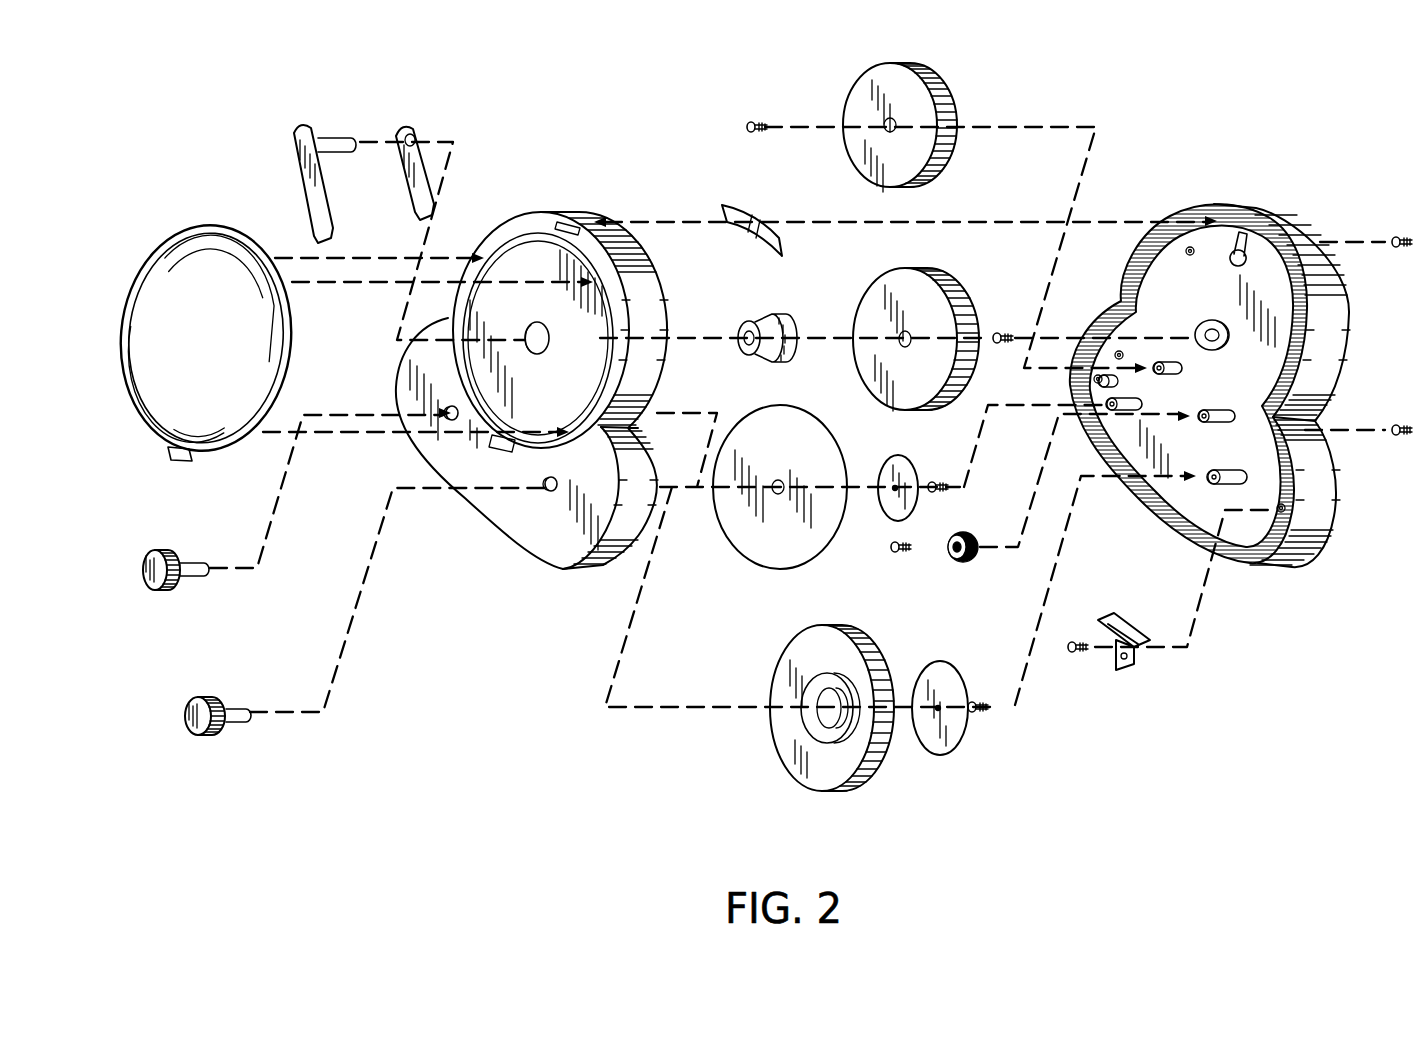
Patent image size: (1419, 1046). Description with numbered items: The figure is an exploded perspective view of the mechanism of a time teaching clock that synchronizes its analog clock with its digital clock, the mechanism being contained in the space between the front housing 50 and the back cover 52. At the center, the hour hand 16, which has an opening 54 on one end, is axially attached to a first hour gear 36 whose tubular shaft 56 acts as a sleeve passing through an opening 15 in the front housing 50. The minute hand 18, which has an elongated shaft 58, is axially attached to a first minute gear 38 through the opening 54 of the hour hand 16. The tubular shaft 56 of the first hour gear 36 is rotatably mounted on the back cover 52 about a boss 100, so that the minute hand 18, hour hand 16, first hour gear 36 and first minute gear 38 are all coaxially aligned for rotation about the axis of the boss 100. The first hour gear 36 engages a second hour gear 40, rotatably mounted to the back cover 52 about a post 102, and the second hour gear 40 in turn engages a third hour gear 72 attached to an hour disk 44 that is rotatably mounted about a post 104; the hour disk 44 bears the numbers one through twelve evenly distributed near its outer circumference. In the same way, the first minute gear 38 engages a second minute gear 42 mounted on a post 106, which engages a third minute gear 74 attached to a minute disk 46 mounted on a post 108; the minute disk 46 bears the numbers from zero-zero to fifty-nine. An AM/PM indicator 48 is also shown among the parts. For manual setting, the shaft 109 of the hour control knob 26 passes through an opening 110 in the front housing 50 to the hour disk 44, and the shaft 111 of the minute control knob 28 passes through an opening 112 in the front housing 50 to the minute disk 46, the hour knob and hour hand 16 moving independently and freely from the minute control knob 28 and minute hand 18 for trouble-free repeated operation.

The opening 15 is at (530, 330).
The hour hand 16 is at (420, 130).
The minute hand 18 is at (300, 127).
The hour control knob 26 is at (153, 591).
The minute control knob 28 is at (200, 736).
The first hour gear 36 is at (756, 354).
The first minute gear 38 is at (968, 294).
The second hour gear 40 is at (950, 88).
The second minute gear 42 is at (959, 563).
The hour disk 44 is at (763, 570).
The minute disk 46 is at (814, 774).
The AM/PM indicator 48 is at (730, 204).
The front housing 50 is at (455, 503).
The back cover 52 is at (1276, 205).
The opening 54 is at (408, 134).
The tubular shaft 56 is at (742, 330).
The elongated shaft 58 is at (345, 137).
The third hour gear 72 is at (896, 507).
The third minute gear 74 is at (934, 752).
The boss 100 is at (1208, 321).
The post 102 is at (1183, 370).
The post 104 is at (1143, 403).
The post 106 is at (1222, 423).
The post 108 is at (1214, 470).
The shaft 109 is at (203, 578).
The opening 110 is at (448, 418).
The shaft 111 is at (244, 723).
The opening 112 is at (551, 492).